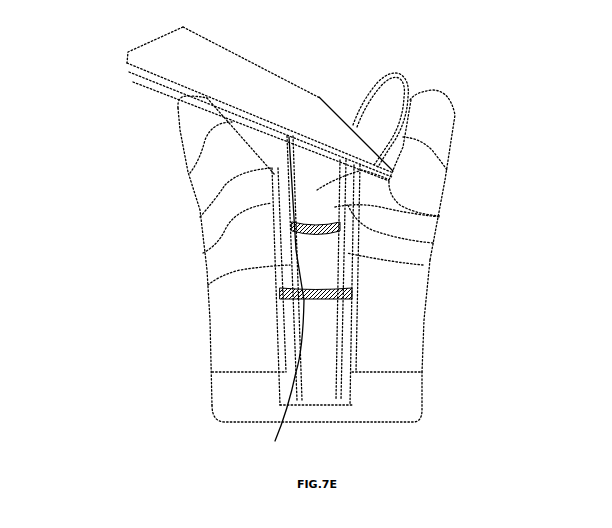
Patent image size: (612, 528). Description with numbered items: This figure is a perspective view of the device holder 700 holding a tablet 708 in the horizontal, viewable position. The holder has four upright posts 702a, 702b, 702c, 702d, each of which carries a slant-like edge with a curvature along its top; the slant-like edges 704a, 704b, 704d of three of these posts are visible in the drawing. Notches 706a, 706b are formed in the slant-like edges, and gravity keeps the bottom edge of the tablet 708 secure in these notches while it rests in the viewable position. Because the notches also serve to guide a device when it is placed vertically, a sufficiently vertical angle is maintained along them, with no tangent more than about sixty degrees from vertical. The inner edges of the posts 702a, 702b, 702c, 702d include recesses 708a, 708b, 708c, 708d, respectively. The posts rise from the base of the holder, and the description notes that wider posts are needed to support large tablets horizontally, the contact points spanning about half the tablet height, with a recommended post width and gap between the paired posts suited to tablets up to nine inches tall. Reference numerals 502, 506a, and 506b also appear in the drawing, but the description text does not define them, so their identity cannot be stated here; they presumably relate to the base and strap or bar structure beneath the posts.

The device holder 700 is at (97, 66).
The tablet 708 is at (290, 83).
The post 702a is at (182, 152).
The post 702b is at (423, 270).
The post 702c is at (208, 285).
The post 702d is at (410, 95).
The slant-like edge 704a is at (190, 172).
The slant-like edge 704b is at (447, 170).
The slant-like edge 704d is at (371, 96).
The notch 706a is at (200, 217).
The notch 706b is at (433, 216).
The recess 708a is at (203, 252).
The recess 708b is at (433, 243).
The recess 708c is at (291, 167).
The recess 708d is at (314, 221).
The base 502 is at (212, 415).
The wire 506a is at (269, 291).
The piston band 506b is at (310, 234).